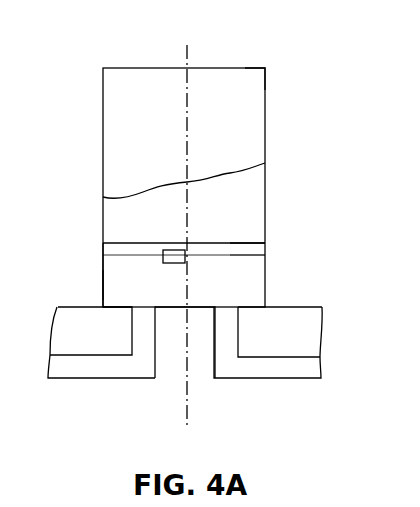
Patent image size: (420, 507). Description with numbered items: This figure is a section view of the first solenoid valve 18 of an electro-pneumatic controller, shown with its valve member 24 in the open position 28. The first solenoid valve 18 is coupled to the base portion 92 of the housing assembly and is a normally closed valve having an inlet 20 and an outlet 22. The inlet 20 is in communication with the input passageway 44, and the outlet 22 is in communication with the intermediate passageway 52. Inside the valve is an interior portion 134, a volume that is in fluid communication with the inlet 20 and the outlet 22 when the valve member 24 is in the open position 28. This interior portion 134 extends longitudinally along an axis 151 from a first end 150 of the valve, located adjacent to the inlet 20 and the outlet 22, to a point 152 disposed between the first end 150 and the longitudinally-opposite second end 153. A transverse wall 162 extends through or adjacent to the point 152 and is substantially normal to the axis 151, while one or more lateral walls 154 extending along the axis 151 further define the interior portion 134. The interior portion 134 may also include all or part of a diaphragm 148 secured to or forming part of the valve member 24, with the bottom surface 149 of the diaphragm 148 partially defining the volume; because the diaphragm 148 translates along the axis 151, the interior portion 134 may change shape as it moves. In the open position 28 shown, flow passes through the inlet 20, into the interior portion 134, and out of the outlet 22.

The first solenoid valve 18 is at (284, 94).
The open position 28 is at (283, 208).
The axis 151 is at (188, 46).
The second end 153 is at (268, 71).
The valve member 24 is at (172, 250).
The transverse wall 162 is at (148, 250).
The diaphragm 148 is at (130, 255).
The point 152 is at (267, 243).
The bottom surface 149 is at (232, 256).
The interior portion 134 is at (138, 280).
The lateral walls 154 is at (105, 275).
The inlet 20 is at (138, 305).
The outlet 22 is at (224, 308).
The first end 150 is at (266, 292).
The input passageway 44 is at (102, 365).
The intermediate passageway 52 is at (272, 366).
The base portion 92 is at (278, 328).